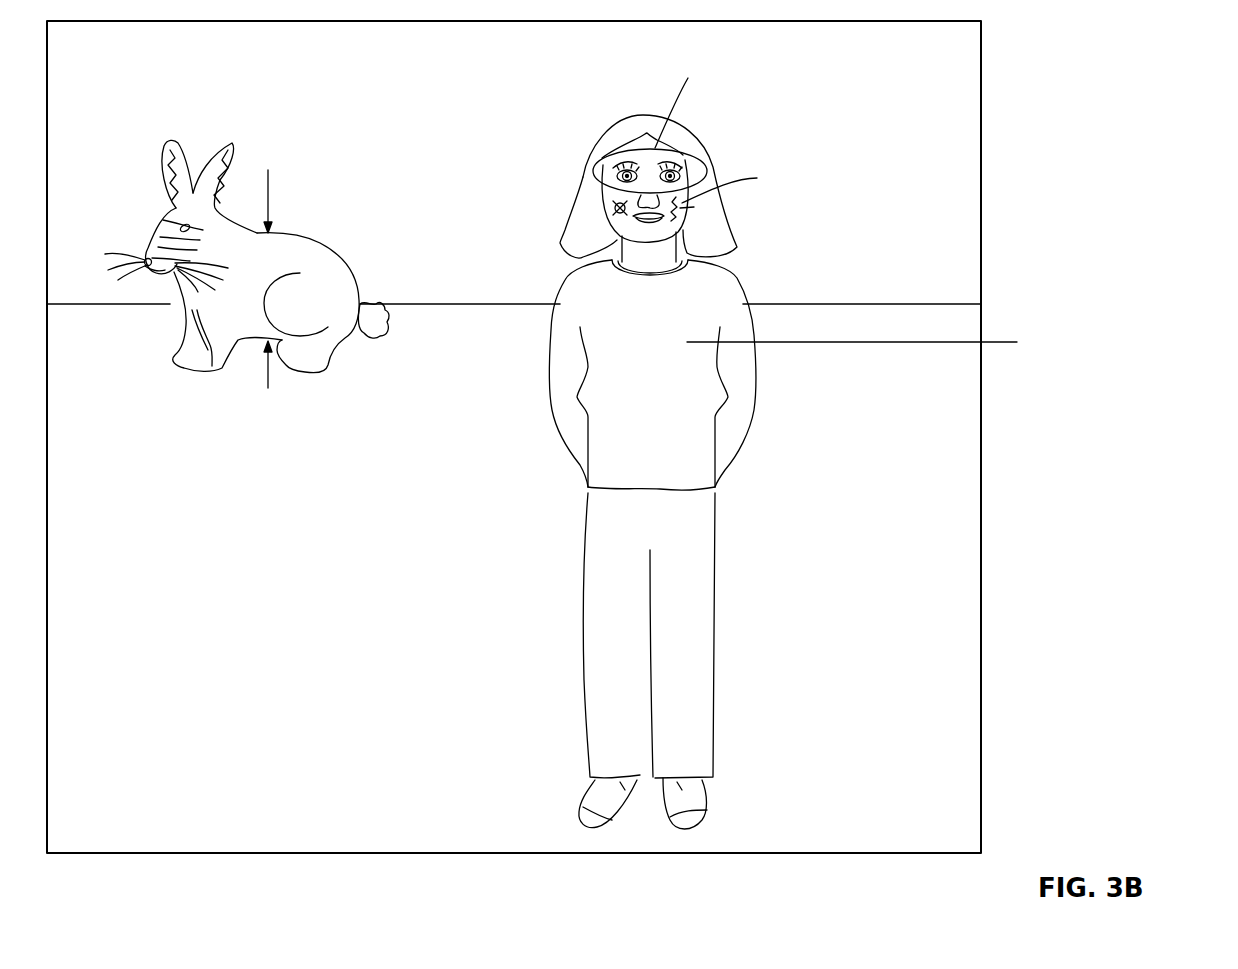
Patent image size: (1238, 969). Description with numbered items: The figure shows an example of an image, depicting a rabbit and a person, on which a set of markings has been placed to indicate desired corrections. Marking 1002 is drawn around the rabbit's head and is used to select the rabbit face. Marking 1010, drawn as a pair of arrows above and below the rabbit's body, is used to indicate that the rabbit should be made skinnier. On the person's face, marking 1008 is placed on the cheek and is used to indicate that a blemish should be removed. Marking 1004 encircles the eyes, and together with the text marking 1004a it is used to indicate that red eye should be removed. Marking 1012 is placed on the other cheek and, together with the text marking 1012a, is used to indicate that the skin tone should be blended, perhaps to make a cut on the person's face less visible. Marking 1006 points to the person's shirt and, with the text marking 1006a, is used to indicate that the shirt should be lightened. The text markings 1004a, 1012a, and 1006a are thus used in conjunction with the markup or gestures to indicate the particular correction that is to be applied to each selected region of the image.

The marking 1002 is at (168, 165).
The marking 1010 is at (269, 190).
The marking 1004 is at (693, 153).
The text marking 1004a is at (755, 65).
The marking 1008 is at (612, 206).
The marking 1012 is at (677, 209).
The text marking 1012a is at (842, 178).
The marking 1006 is at (825, 343).
The text marking 1006a is at (1100, 360).